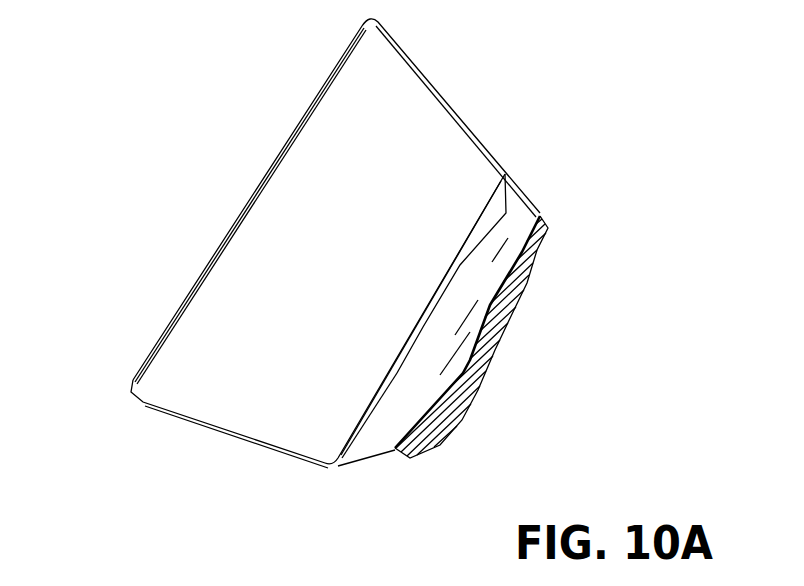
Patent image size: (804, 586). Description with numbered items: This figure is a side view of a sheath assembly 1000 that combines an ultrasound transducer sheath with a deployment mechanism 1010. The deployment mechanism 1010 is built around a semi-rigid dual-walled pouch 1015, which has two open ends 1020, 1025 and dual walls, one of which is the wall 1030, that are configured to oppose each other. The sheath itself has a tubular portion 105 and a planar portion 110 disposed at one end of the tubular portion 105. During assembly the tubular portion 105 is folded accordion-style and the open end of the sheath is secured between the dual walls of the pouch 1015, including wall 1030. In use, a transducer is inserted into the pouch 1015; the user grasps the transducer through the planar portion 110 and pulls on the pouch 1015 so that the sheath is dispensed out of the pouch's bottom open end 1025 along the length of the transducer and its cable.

The sheath assembly 1000 is at (196, 44).
The deployment mechanism 1010 is at (130, 328).
The semi-rigid dual-walled pouch 1015 is at (212, 403).
The open end 1020 is at (263, 187).
The dual wall 1030 is at (467, 150).
The tubular portion 105 is at (505, 213).
The planar portion 110 is at (513, 312).
The open end 1025 is at (385, 388).